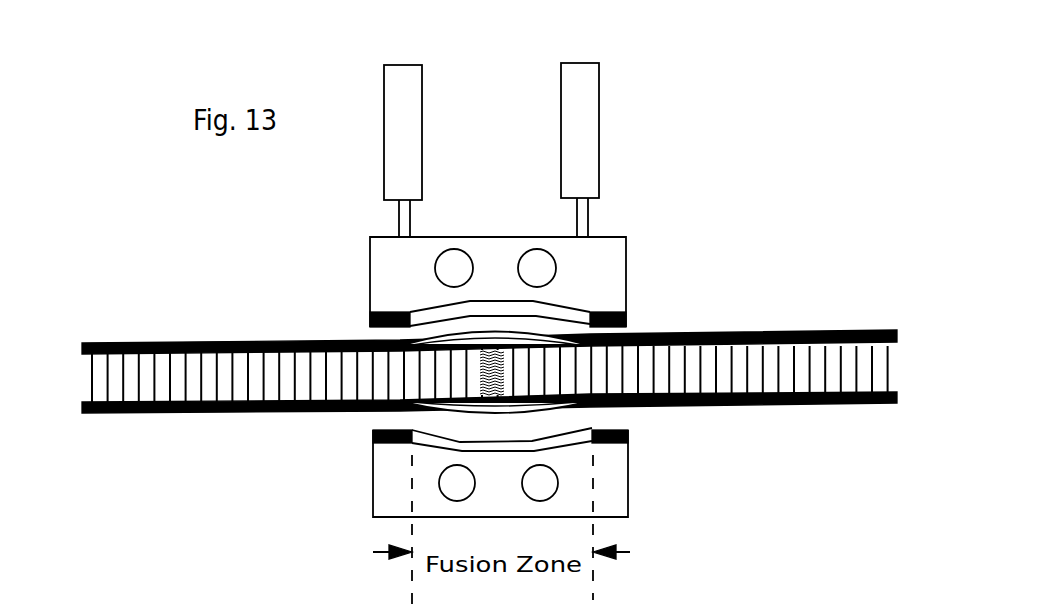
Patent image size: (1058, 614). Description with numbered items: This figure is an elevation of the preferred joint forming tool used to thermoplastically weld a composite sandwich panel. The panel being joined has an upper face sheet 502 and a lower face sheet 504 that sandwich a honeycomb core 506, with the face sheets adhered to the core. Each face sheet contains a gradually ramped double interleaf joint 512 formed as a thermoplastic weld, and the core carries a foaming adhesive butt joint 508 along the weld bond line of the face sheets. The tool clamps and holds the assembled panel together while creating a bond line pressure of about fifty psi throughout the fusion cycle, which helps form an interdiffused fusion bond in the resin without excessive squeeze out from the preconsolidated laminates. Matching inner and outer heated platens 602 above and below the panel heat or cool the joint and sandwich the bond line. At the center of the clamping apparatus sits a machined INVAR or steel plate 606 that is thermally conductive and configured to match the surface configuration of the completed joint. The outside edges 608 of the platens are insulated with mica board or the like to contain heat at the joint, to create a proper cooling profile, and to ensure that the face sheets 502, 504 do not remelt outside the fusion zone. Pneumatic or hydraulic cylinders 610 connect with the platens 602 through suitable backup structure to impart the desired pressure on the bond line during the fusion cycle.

The upper face sheet 502 is at (181, 340).
The lower face sheet 504 is at (745, 403).
The honeycomb core 506 is at (82, 382).
The foaming adhesive butt joint 508 is at (480, 378).
The gradually ramped double interleaf joint 512 is at (565, 335).
The heated platen 602 is at (367, 266).
The machined INVAR or steel plate 606 is at (560, 312).
The outside edges of the platens 608 is at (369, 319).
The pneumatic or hydraulic cylinders 610 is at (425, 75).